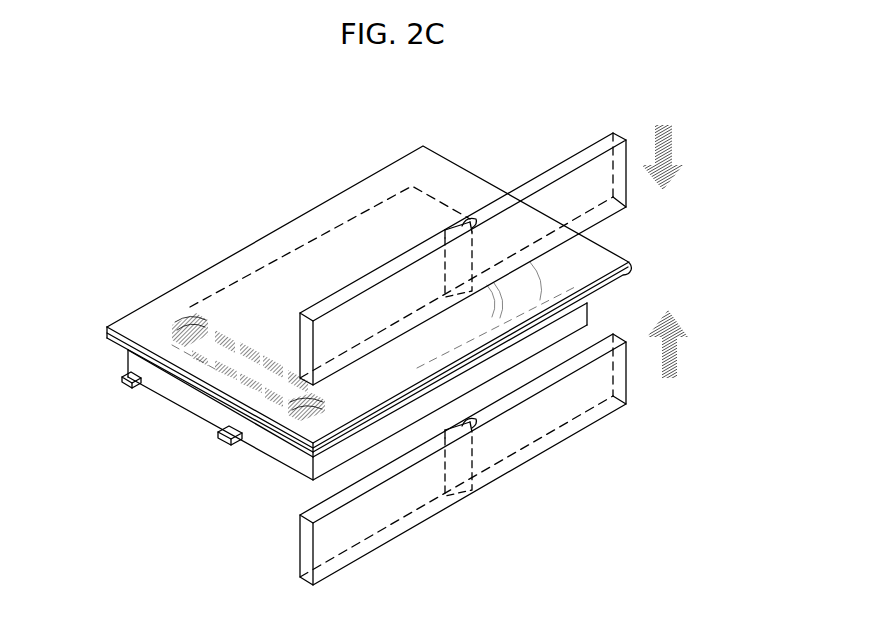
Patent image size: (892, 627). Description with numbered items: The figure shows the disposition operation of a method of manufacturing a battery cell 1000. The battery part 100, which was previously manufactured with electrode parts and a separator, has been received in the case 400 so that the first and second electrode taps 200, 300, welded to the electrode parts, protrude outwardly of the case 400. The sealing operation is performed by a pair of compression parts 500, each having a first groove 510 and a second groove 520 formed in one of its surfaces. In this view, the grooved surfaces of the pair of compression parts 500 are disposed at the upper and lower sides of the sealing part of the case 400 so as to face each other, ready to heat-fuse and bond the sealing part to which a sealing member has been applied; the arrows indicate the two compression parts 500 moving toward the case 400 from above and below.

The display device 1000 is at (155, 236).
The battery part 100 is at (279, 248).
The first electrode tap 200 is at (122, 388).
The second electrode tap 300 is at (219, 441).
The case 400 is at (556, 263).
The compression part 500 is at (335, 347).
The first groove 510 is at (466, 222).
The second groove 520 is at (468, 427).